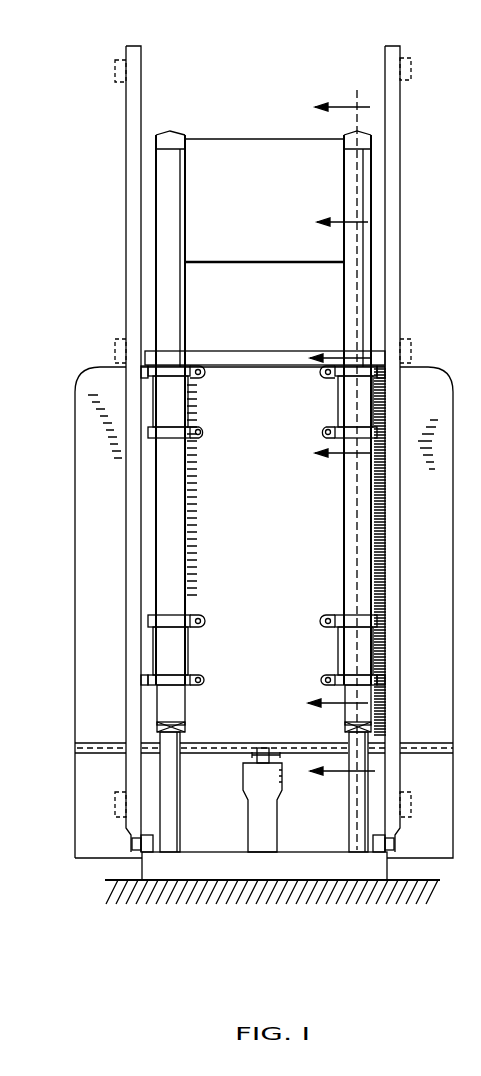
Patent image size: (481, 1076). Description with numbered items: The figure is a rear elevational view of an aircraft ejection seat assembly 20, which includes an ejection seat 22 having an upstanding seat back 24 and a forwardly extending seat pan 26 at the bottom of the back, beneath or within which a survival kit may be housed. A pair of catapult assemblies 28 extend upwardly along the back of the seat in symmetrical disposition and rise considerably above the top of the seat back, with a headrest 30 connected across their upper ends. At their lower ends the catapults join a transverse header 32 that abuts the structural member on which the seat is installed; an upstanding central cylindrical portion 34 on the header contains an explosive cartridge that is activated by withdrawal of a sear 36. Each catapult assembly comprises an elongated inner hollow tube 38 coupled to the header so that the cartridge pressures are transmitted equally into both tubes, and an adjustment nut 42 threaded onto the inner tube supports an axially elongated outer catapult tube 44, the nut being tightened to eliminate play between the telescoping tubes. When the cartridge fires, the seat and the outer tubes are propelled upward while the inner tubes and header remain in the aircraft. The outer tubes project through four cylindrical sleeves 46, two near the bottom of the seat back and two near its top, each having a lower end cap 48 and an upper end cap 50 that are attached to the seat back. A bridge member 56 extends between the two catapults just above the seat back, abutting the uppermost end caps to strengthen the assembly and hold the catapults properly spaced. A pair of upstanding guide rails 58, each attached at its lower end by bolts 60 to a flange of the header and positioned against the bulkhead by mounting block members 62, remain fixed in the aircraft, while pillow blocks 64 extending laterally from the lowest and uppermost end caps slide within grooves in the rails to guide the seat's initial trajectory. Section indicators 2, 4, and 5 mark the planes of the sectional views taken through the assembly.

The ejection seat assembly 20 is at (70, 503).
The ejection seat 22 is at (72, 564).
The seat back 24 is at (95, 432).
The seat pan 26 is at (75, 792).
The catapult assembly 28 is at (186, 565).
The headrest 30 is at (224, 150).
The header 32 is at (188, 885).
The central cylindrical portion 34 is at (250, 818).
The sear 36 is at (285, 735).
The inner hollow tube 38 is at (170, 800).
The adjustment nut 42 is at (186, 727).
The outer catapult tube 44 is at (180, 710).
The cylindrical sleeve 46 is at (180, 650).
The lower end cap 48 is at (190, 665).
The upper end cap 50 is at (186, 618).
The bridge member 56 is at (238, 362).
The guide rail 58 is at (126, 545).
The bolt 60 is at (132, 845).
The mounting block member 62 is at (112, 74).
The pillow block 64 is at (145, 369).
The section line 2- 2 is at (333, 401).
The section line 4- 4 is at (334, 736).
The section line 5- 5 is at (333, 164).